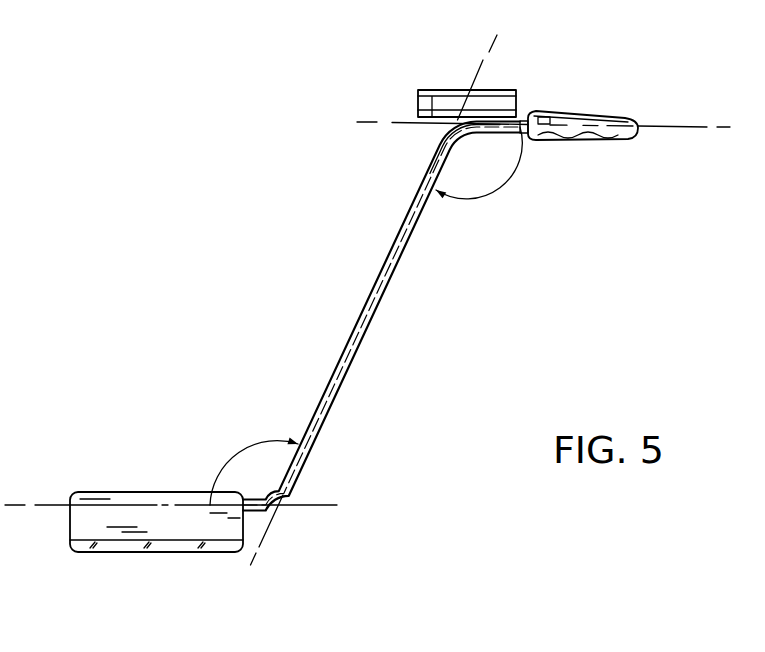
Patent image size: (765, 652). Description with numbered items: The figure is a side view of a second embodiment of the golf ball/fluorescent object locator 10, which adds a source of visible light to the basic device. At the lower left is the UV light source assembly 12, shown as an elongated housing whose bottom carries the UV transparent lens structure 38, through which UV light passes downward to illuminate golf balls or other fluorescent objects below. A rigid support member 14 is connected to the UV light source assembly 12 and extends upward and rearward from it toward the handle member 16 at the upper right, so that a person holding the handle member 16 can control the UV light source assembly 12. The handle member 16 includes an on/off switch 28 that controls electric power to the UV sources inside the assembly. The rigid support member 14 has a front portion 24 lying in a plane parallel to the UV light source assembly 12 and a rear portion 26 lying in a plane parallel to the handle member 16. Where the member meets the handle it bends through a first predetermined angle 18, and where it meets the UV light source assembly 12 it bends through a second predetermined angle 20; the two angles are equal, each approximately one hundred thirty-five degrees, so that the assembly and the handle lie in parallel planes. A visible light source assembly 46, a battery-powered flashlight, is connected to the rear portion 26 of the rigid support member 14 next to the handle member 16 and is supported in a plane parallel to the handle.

The golf ball/fluorescent object locator 10 is at (268, 280).
The UV light source assembly 12 is at (128, 488).
The rigid support member 14 is at (357, 350).
The handle member 16 is at (612, 112).
The first predetermined angle 18 is at (503, 170).
The second predetermined angle 20 is at (245, 453).
The front portion 24 is at (263, 525).
The rear portion 26 is at (492, 130).
The on/off switch 28 is at (542, 116).
The UV transparent lens structure 38 is at (172, 552).
The visible light source assembly 46 is at (448, 87).